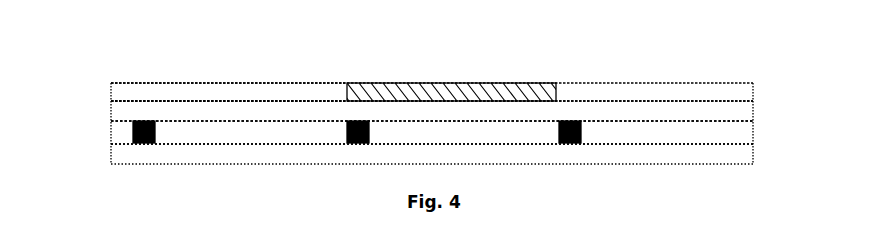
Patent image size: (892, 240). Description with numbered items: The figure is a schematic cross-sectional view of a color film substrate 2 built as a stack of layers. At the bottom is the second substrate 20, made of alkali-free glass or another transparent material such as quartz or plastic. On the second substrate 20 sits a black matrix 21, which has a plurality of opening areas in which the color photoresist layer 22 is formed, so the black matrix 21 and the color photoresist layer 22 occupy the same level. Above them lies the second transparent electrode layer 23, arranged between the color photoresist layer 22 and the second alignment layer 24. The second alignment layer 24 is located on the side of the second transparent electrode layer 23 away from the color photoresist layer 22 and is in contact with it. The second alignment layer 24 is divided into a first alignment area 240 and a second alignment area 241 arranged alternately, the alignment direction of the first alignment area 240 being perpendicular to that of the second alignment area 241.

The color film substrate 2 is at (95, 102).
The second substrate 20 is at (747, 157).
The black matrix 21 is at (568, 122).
The color photoresist layer 22 is at (615, 132).
The second transparent electrode layer 23 is at (743, 113).
The second alignment layer 24 is at (753, 85).
The first alignment area 240 is at (215, 97).
The second alignment area 241 is at (437, 97).